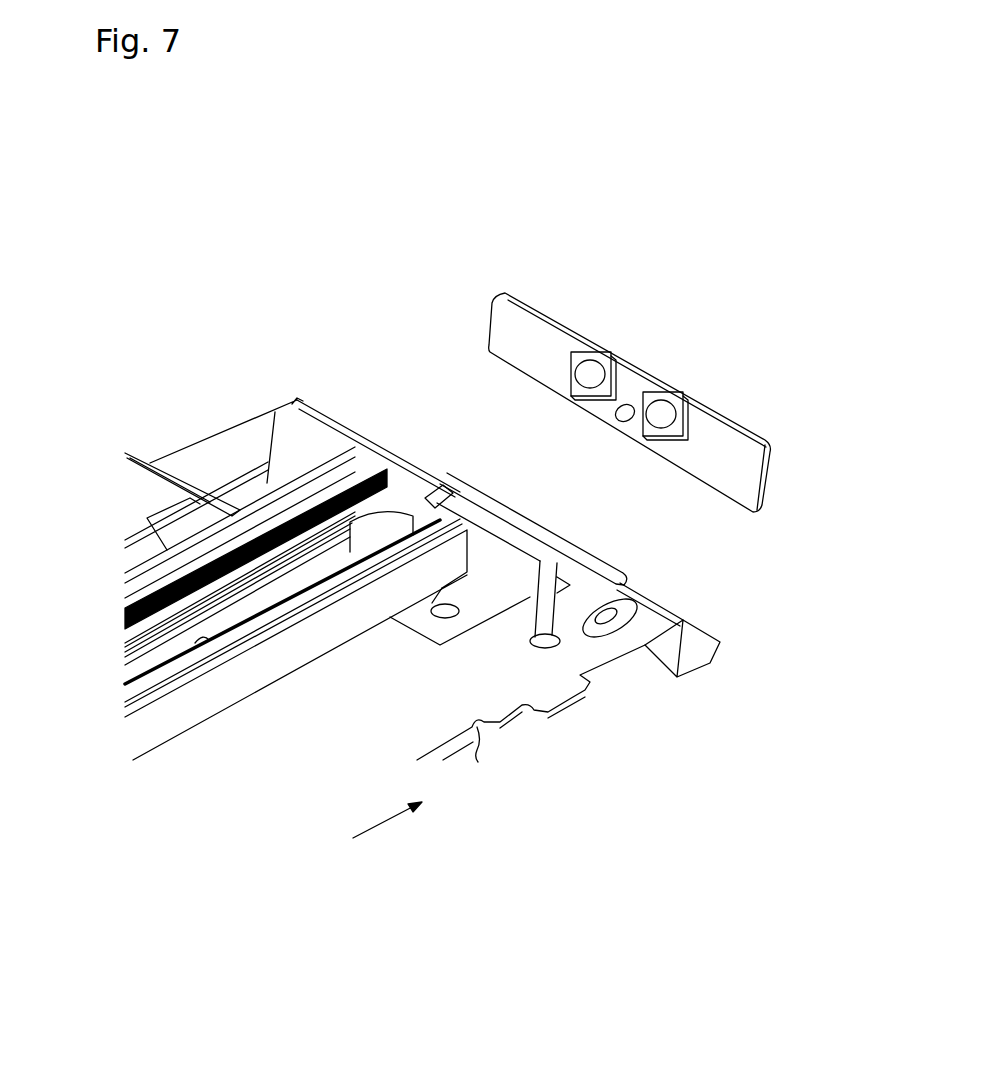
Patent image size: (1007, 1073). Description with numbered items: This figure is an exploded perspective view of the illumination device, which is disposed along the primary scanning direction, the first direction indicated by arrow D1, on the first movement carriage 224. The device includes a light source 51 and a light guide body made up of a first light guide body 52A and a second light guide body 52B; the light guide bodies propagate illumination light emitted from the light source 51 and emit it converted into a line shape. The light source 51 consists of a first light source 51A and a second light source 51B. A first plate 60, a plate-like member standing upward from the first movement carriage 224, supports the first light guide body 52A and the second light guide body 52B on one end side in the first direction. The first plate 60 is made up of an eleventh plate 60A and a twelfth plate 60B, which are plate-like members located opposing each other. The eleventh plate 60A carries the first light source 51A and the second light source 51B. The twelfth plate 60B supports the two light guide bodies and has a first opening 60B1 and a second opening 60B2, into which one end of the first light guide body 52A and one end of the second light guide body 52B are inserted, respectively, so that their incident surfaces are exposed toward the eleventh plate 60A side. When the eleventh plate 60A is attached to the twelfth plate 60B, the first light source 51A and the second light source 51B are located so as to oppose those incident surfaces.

The light source 51 is at (656, 340).
The first light source 51A is at (590, 360).
The second light source 51B is at (660, 400).
The first light guide body 52A is at (263, 532).
The second light guide body 52B is at (292, 607).
The first plate 60 is at (672, 444).
The eleventh plate 60A is at (672, 376).
The twelfth plate 60B is at (530, 585).
The first opening 60B1 is at (353, 473).
The second opening 60B2 is at (440, 505).
The first movement carriage 224 is at (553, 688).
The arrow D1 (first direction) D1 is at (385, 823).